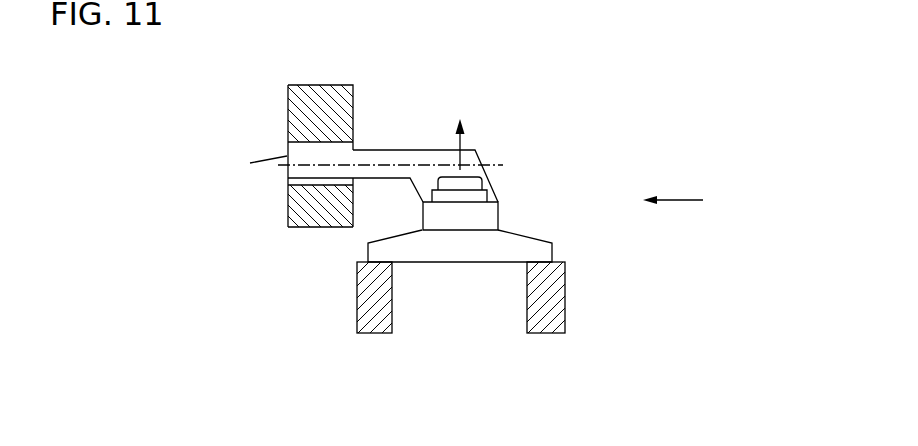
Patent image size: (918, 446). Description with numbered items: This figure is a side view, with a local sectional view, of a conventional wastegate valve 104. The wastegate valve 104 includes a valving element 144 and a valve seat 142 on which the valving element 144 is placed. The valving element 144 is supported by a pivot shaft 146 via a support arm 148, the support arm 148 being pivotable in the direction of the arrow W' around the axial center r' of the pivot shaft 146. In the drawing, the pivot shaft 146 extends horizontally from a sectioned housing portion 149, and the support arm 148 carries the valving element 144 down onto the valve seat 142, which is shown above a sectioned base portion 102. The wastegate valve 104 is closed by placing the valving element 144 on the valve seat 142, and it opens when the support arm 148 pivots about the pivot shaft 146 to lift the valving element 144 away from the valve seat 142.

The wastegate valve 104 is at (585, 91).
The bearing housing 149 is at (343, 107).
The pivot shaft 146 is at (395, 157).
The support arm 148 is at (483, 217).
The valving element 144 is at (522, 245).
The valve seat 142 is at (362, 262).
The substrate 102 is at (472, 313).